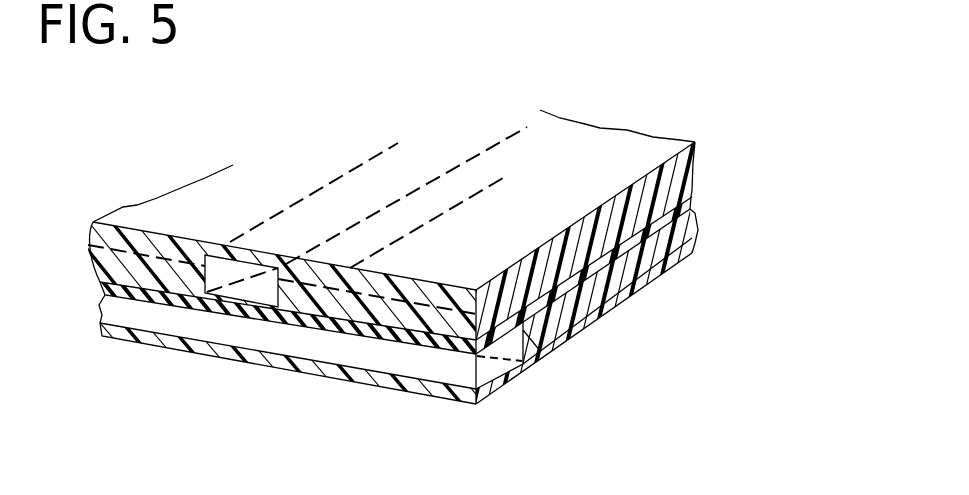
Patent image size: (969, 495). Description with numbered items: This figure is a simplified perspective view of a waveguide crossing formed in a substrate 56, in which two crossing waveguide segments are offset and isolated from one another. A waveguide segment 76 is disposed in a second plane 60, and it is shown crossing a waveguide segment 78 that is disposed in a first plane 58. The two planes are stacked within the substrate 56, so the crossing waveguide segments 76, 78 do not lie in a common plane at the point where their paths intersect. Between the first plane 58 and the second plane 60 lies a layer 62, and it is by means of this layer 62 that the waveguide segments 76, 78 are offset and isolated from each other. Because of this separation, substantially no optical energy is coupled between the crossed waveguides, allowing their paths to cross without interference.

The substrate 56 is at (228, 368).
The first plane 58 is at (617, 292).
The second plane 60 is at (577, 180).
The layer 62 is at (690, 200).
The waveguide segment 76 is at (315, 236).
The waveguide segment 78 is at (157, 313).